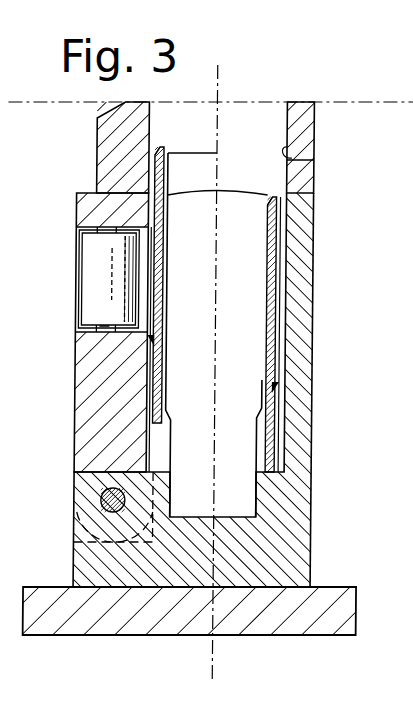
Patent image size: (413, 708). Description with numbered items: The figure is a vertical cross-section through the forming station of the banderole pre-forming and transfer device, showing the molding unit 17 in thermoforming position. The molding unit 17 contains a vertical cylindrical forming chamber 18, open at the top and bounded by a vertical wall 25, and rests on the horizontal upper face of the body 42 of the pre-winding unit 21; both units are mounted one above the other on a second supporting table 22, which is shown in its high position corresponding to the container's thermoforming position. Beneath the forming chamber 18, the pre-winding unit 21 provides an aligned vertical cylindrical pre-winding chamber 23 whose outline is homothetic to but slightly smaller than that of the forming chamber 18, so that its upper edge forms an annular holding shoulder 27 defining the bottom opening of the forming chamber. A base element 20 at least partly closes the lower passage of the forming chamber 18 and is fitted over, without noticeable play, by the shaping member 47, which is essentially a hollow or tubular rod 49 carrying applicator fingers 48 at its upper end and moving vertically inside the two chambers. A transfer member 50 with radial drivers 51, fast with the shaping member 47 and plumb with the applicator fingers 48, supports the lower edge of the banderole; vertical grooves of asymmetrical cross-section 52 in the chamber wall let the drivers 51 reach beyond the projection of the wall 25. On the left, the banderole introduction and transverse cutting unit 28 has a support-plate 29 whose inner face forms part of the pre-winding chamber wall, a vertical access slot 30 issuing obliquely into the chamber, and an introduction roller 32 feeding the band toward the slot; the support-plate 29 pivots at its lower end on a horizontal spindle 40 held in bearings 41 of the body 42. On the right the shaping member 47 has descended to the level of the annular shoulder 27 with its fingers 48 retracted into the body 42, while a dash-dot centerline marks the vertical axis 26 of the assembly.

The molding unit 17 is at (105, 155).
The forming chamber 18 is at (269, 128).
The base element 20 is at (243, 250).
The pre-winding unit 21 is at (270, 498).
The second supporting table 22 is at (143, 622).
The pre-winding chamber 23 is at (157, 290).
The vertical wall 25 is at (292, 157).
The central axis 26 is at (219, 95).
The annular holding shoulder 27 is at (165, 180).
The banderole introduction and transverse cutting unit 28 is at (69, 340).
The support-plate 29 is at (95, 419).
The access slot 30 is at (143, 305).
The introduction roller 32 is at (88, 259).
The horizontal spindle 40 is at (102, 505).
The bearings 41 is at (78, 535).
The body 42 is at (200, 565).
The shaping member 47 is at (276, 230).
The applicator fingers 48 is at (157, 147).
The hollow or tubular rod 49 is at (270, 447).
The transfer member 50 is at (149, 342).
The radial drivers 51 is at (125, 360).
The vertical grooves of asymmetrical cross-section 52 is at (283, 299).